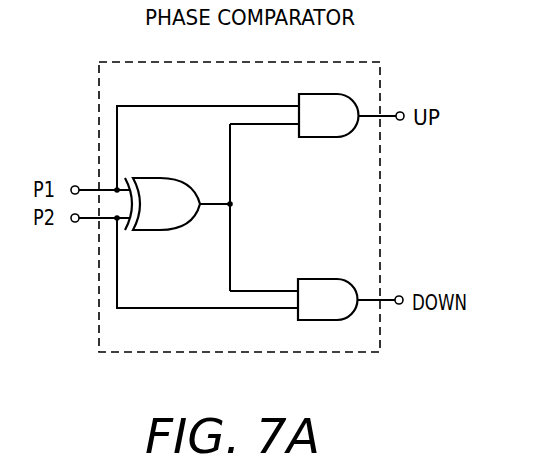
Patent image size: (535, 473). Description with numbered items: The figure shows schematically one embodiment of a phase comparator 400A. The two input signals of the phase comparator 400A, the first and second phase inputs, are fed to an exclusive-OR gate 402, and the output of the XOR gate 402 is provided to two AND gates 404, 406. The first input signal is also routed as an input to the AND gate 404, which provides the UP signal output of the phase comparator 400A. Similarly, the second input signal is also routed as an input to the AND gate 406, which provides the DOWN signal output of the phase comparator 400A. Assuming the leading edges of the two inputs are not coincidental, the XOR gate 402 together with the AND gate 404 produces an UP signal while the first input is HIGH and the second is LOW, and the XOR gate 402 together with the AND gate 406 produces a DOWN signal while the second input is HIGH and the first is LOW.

The phase comparator 400A is at (172, 62).
The exclusive-OR gate 402 is at (150, 178).
The AND gate 404 is at (328, 120).
The AND gate 406 is at (318, 287).